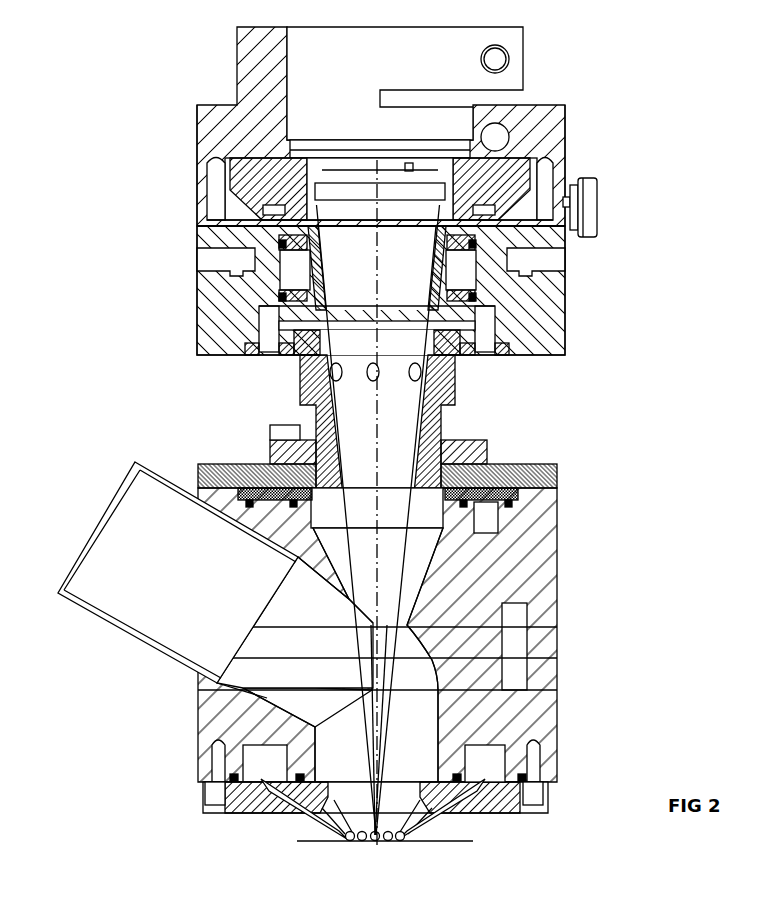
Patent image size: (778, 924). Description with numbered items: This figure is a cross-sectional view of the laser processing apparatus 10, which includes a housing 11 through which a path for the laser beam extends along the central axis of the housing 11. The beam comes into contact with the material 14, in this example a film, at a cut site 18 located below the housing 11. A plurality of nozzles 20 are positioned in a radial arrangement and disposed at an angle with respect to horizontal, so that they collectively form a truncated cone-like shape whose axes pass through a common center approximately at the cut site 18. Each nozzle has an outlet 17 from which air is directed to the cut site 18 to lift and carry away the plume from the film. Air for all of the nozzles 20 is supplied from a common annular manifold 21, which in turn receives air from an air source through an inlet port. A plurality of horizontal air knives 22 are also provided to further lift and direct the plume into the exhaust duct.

The laser processing apparatus 10 is at (575, 148).
The housing 11 is at (566, 478).
The material 14 is at (451, 848).
The outlet 17 is at (362, 842).
The cut site 18 is at (378, 838).
The nozzles 20 is at (283, 823).
The annular manifold 21 is at (494, 760).
The air knives 22 is at (563, 690).